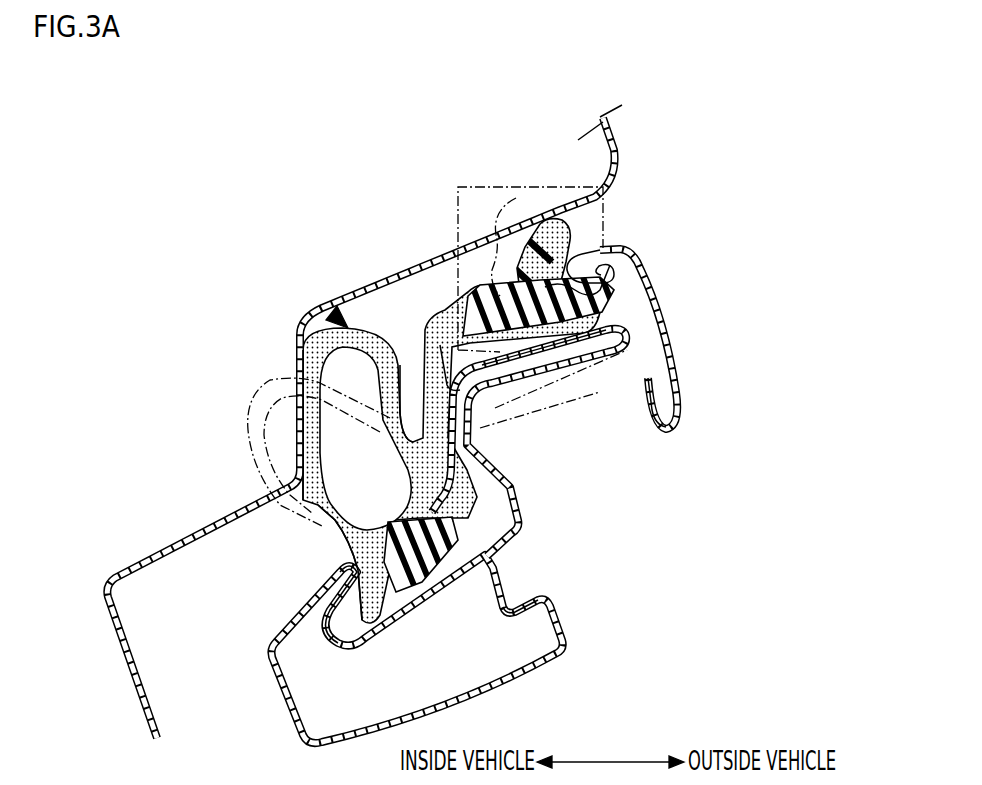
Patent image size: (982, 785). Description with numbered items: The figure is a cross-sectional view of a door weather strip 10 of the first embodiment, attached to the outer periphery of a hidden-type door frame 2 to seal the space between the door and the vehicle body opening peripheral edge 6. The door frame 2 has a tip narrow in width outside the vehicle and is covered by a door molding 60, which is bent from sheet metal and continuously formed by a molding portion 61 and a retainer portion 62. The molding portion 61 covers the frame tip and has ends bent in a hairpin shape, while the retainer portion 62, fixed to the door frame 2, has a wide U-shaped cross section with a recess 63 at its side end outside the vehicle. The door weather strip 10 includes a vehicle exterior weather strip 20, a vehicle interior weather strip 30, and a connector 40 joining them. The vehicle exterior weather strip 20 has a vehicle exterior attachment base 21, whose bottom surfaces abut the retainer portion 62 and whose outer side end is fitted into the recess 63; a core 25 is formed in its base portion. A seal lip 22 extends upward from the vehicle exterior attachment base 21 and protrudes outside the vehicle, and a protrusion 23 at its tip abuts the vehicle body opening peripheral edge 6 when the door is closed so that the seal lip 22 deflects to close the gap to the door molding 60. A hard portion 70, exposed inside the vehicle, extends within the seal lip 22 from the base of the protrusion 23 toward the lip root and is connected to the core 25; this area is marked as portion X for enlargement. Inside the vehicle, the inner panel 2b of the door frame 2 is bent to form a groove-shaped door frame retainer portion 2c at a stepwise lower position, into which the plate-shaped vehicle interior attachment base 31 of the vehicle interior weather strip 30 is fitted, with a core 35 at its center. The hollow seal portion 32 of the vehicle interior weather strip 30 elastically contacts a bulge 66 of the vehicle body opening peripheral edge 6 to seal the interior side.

The door frame 2 is at (479, 649).
The inner panel 2b is at (490, 687).
The door frame retainer portion 2c is at (382, 555).
The vehicle body opening peripheral edge 6 is at (453, 325).
The door weather strip 10 is at (335, 313).
The vehicle exterior weather strip 20 is at (602, 250).
The vehicle exterior attachment base 21 is at (462, 352).
The seal lip 22 is at (575, 246).
The protrusion 23 is at (538, 224).
The core 25 is at (410, 380).
The vehicle interior weather strip 30 is at (322, 515).
The vehicle interior attachment base 31 is at (380, 612).
The hollow seal portion 32 is at (330, 336).
The core 35 is at (415, 545).
The connector 40 is at (334, 314).
The door molding 60 is at (650, 336).
The molding portion 61 is at (680, 372).
The retainer portion 62 is at (577, 327).
The recess 63 is at (614, 290).
The bulge 66 is at (297, 413).
The hard portion 70 is at (524, 265).
The portion X is at (515, 188).